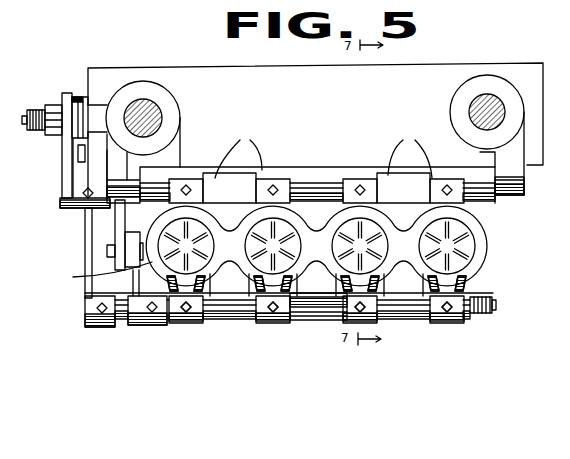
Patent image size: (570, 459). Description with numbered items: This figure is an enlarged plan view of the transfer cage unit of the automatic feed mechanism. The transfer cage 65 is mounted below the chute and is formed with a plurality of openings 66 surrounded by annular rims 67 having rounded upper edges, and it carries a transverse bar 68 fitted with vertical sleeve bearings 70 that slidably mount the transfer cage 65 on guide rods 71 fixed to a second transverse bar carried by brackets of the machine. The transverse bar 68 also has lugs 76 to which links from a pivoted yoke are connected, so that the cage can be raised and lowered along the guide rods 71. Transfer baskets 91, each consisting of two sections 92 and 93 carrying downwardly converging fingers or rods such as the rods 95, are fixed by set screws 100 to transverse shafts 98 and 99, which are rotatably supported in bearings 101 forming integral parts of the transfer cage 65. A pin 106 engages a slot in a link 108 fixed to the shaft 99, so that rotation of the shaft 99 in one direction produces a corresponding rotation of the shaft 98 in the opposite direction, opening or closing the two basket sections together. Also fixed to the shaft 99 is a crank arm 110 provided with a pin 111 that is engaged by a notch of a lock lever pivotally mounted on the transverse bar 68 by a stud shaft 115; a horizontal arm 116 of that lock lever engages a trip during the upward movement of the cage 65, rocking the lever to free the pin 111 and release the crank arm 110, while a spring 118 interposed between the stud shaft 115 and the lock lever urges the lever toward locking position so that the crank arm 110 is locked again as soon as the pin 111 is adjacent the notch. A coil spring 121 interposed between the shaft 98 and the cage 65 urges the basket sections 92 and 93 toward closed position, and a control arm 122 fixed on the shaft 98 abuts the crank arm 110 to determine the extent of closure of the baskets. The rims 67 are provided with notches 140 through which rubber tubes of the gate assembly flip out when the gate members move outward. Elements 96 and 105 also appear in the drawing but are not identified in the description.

The transfer cage 65 is at (76, 277).
The openings 66 is at (250, 320).
The annular rims 67 is at (166, 223).
The transverse bar 68 is at (232, 66).
The vertical sleeve bearings 70 is at (148, 95).
The guide rods 71 is at (160, 110).
The lugs 76 is at (136, 169).
The transfer baskets 91 is at (301, 251).
The basket section 92 is at (207, 327).
The basket section 93 is at (323, 151).
The fingers or rods 95 is at (204, 241).
The lower spoke 96 is at (205, 258).
The transverse shaft 98 is at (348, 315).
The transverse shaft 99 is at (318, 190).
The set screws 100 is at (187, 186).
The bearings 101 is at (225, 190).
The end plate 105 is at (117, 321).
The pin 106 is at (107, 251).
The link 108 is at (115, 235).
The crank arm 110 is at (66, 163).
The pin 111 is at (78, 93).
The stud shaft 115 is at (31, 112).
The horizontal arm 116 is at (78, 151).
The spring 118 is at (54, 104).
The coil spring 121 is at (494, 300).
The control arm 122 is at (86, 224).
The notches 140 is at (492, 280).